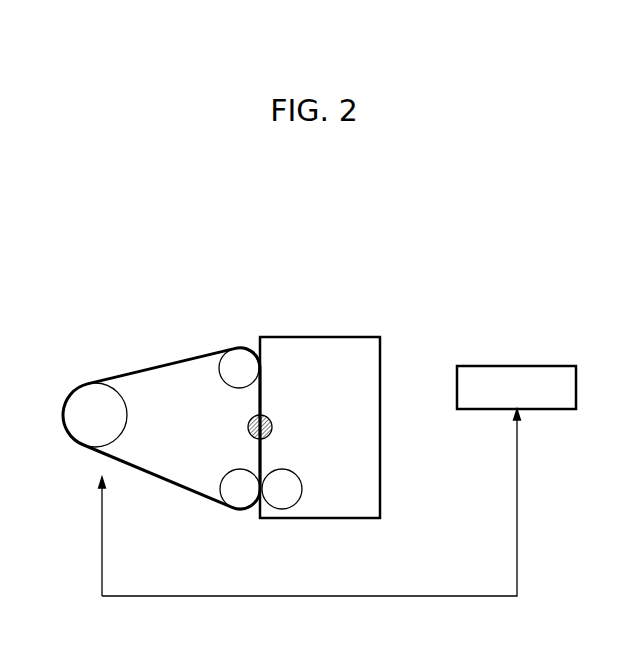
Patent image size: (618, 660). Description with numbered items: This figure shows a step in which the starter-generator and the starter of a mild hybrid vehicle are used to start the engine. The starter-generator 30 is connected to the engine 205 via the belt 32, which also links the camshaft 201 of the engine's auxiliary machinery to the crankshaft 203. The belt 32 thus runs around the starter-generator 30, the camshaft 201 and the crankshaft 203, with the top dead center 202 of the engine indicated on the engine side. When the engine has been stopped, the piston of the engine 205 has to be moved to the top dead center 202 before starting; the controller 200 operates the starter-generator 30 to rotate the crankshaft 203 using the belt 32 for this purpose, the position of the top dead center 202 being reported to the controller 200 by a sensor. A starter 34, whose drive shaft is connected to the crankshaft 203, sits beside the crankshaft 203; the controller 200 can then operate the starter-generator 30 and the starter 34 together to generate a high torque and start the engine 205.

The starter-generator 30 is at (80, 401).
The belt 32 is at (130, 373).
The starter 34 is at (282, 500).
The controller 200 is at (550, 366).
The camshaft 201 is at (238, 356).
The top dead center 202 is at (268, 417).
The crankshaft 203 is at (238, 498).
The engine 205 is at (347, 337).